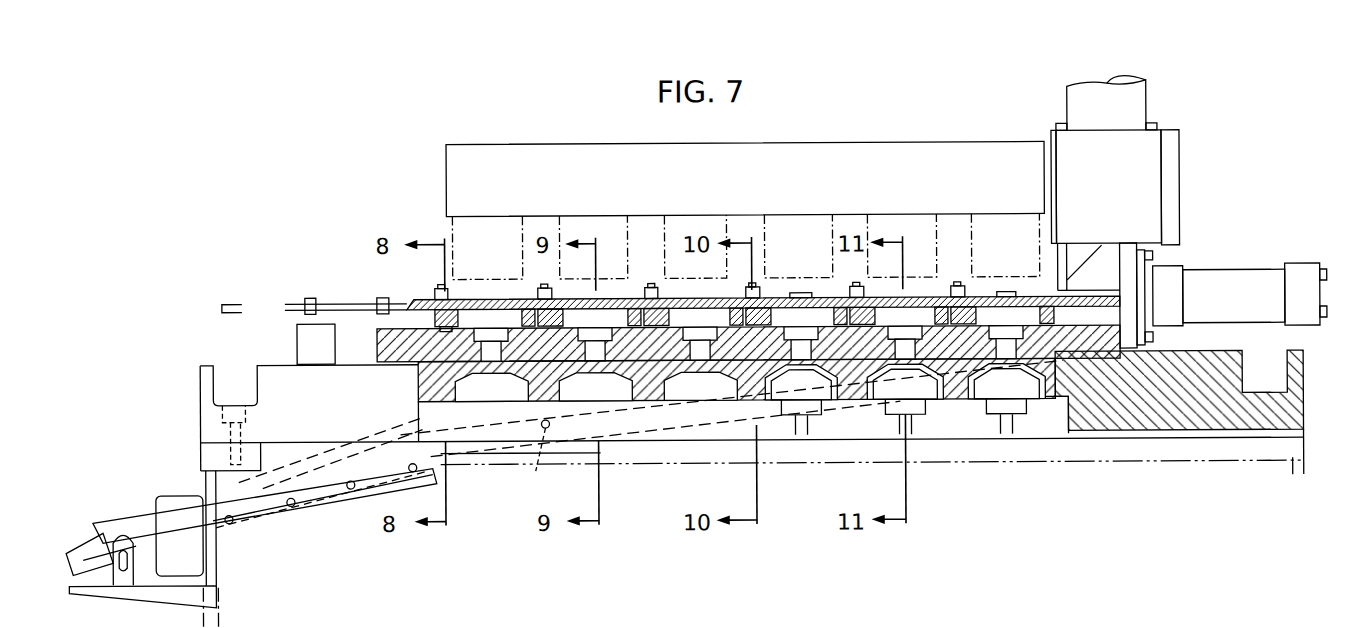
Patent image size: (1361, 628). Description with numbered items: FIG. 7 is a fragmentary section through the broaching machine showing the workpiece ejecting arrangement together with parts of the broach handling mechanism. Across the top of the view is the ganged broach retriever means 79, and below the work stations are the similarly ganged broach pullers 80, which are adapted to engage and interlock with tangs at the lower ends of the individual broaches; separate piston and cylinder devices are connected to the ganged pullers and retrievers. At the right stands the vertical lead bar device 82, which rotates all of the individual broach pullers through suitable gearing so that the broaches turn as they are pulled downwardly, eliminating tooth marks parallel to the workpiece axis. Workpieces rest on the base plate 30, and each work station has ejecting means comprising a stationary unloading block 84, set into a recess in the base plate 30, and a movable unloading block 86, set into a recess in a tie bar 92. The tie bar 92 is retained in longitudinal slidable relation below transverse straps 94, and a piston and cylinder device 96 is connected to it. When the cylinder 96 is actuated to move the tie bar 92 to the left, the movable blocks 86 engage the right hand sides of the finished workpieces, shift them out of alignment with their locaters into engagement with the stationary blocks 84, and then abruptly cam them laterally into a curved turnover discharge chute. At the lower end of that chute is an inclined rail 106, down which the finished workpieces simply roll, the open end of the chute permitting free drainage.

The base plate 30 is at (377, 342).
The ganged broach retriever means 79 is at (828, 186).
The ganged broach pullers 80 is at (1060, 418).
The vertical lead bar device 82 is at (1181, 187).
The stationary unloading block 84 is at (478, 302).
The movable unloading block 86 is at (838, 306).
The tie bar 92 is at (1034, 292).
The transverse straps 94 is at (764, 290).
The piston and cylinder device 96 is at (1255, 271).
The inclined rail 106 is at (542, 432).